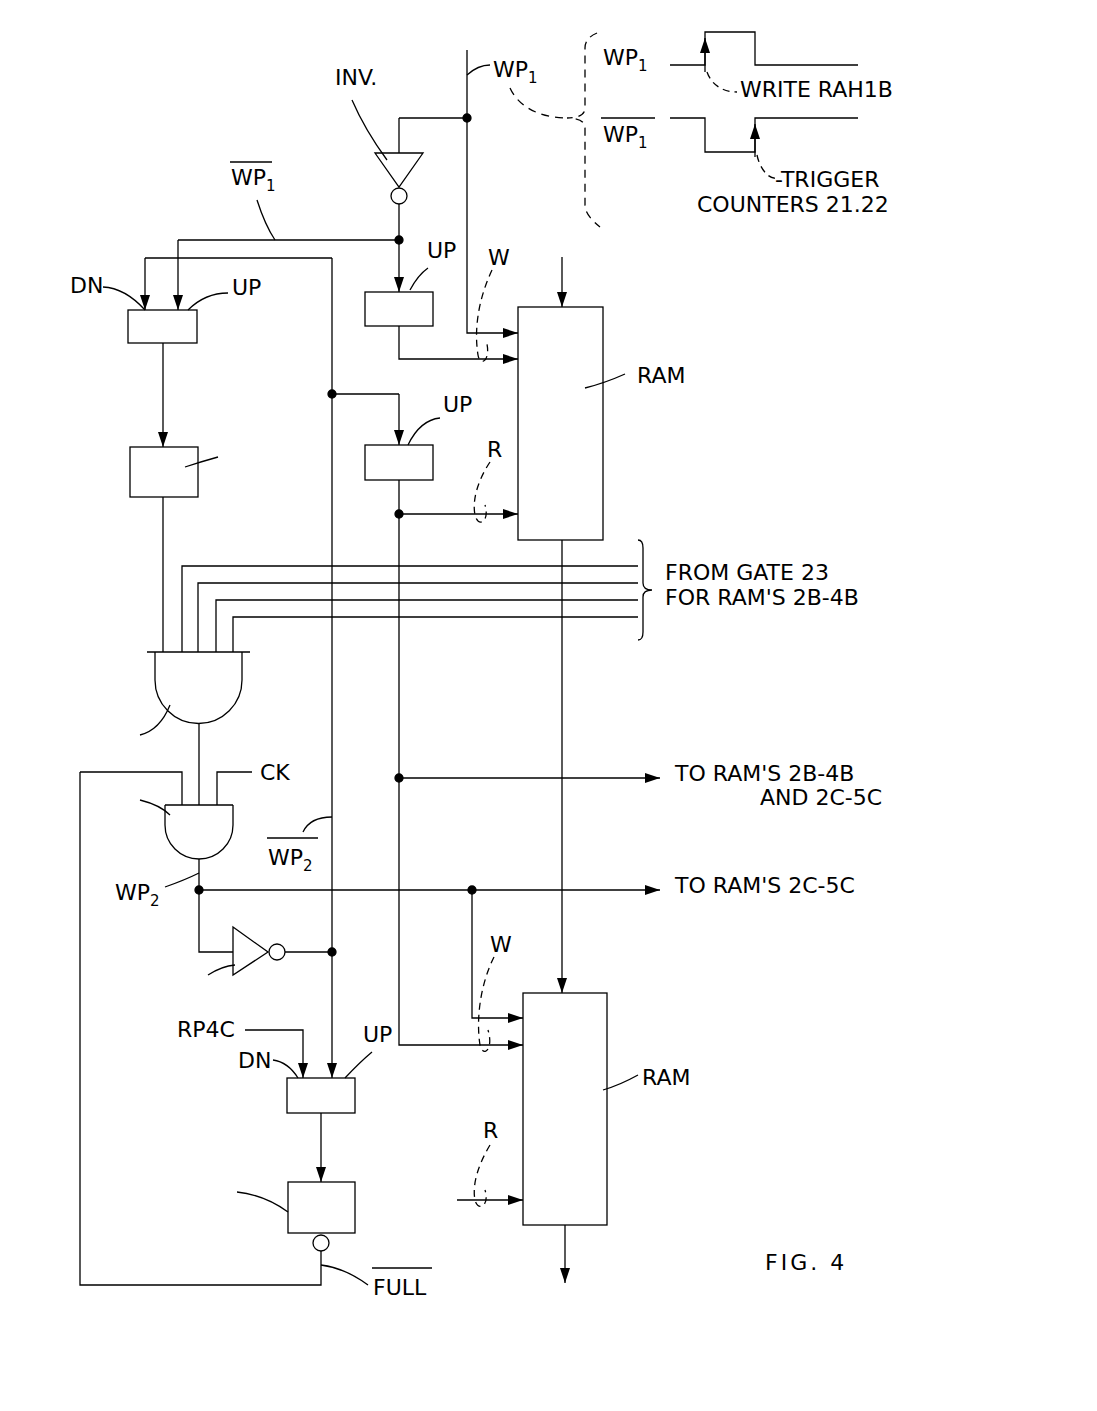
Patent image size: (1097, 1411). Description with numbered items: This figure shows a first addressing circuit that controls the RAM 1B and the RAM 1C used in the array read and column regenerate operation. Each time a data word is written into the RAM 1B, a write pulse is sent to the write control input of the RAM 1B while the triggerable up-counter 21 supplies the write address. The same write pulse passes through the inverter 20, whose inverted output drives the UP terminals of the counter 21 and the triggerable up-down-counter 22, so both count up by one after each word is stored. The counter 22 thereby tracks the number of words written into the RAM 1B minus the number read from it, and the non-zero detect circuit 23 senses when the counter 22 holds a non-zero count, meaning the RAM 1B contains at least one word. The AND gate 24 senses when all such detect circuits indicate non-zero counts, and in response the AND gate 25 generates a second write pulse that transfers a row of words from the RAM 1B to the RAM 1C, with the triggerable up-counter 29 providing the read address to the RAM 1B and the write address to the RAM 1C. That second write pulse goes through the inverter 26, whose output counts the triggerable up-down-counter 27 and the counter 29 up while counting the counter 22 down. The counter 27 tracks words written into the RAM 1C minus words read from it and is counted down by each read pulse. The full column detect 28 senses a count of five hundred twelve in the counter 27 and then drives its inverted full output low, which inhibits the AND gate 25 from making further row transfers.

The inverter 20 is at (383, 163).
The triggerable up-counter 21 is at (380, 326).
The triggerable up-down-counter 22 is at (185, 343).
The non-zero detect circuit 23 is at (140, 497).
The AND gate 24 is at (165, 693).
The AND gate 25 is at (178, 835).
The inverter 26 is at (245, 965).
The triggerable up-down-counter 27 is at (355, 1098).
The full column detect 28 is at (348, 1210).
The triggerable up-counter 29 is at (382, 480).
The RAM 1B is at (560, 423).
The RAM 1C is at (565, 1109).